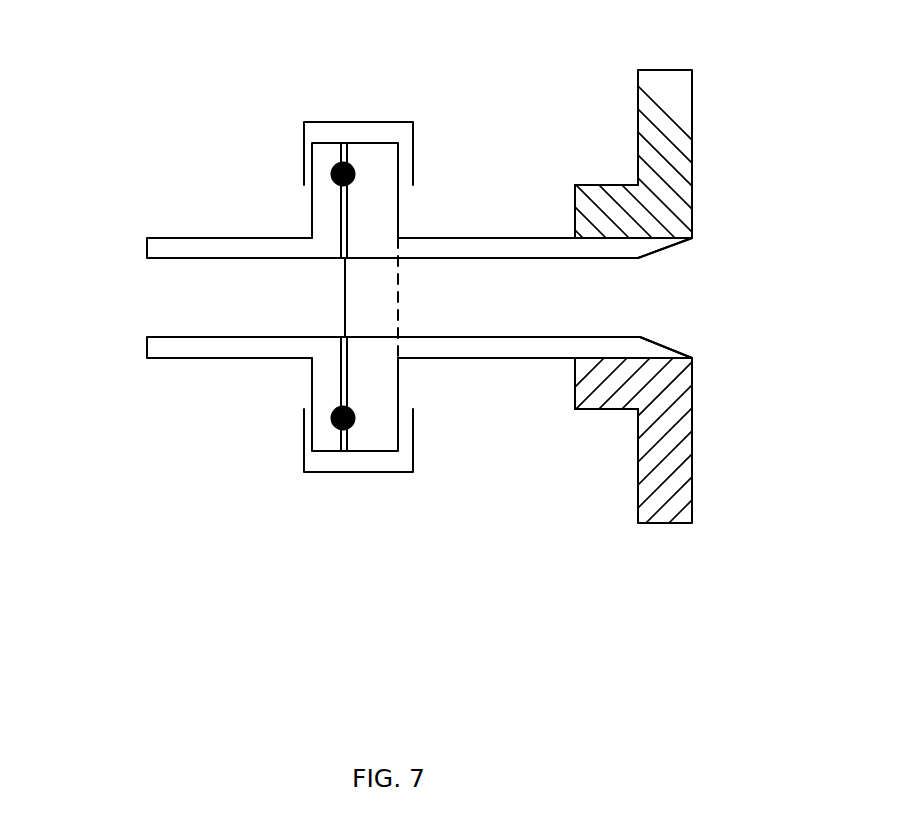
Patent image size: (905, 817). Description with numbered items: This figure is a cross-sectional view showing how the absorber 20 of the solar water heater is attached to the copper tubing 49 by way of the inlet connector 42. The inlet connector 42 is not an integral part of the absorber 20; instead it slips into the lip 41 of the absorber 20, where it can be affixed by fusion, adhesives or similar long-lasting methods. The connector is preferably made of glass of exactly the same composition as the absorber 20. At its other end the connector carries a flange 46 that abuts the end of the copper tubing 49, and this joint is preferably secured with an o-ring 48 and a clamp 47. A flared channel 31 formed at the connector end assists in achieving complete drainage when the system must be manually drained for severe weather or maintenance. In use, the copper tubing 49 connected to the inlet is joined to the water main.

The absorber 20 is at (668, 130).
The flared channel 31 is at (685, 263).
The lip 41 is at (577, 206).
The inlet connector 42 is at (474, 290).
The flange 46 is at (372, 185).
The clamp 47 is at (286, 165).
The o-ring 48 is at (355, 175).
The copper tubing 49 is at (294, 211).